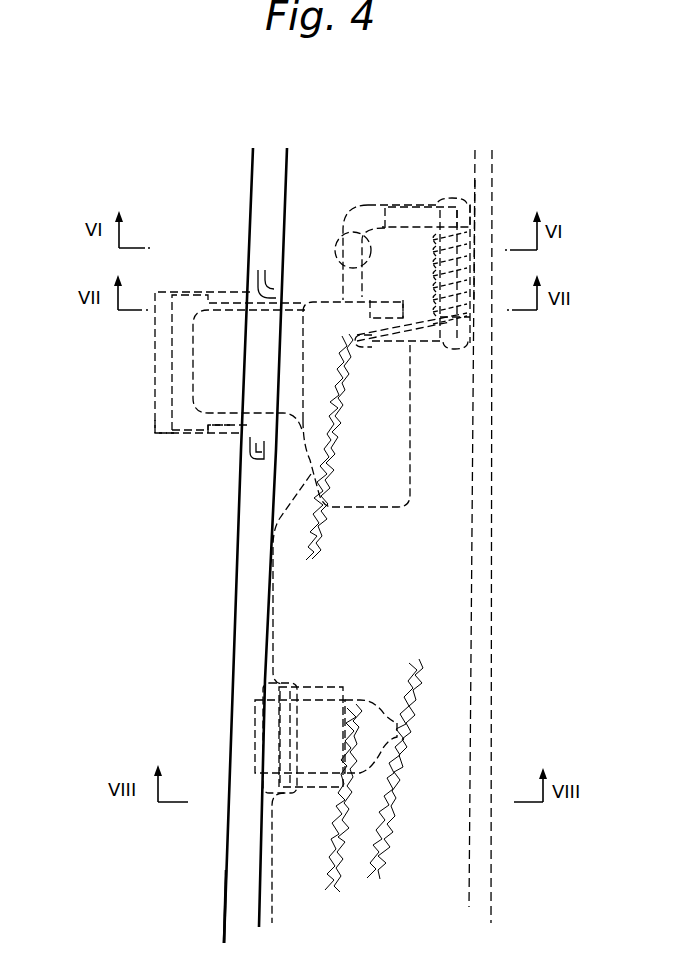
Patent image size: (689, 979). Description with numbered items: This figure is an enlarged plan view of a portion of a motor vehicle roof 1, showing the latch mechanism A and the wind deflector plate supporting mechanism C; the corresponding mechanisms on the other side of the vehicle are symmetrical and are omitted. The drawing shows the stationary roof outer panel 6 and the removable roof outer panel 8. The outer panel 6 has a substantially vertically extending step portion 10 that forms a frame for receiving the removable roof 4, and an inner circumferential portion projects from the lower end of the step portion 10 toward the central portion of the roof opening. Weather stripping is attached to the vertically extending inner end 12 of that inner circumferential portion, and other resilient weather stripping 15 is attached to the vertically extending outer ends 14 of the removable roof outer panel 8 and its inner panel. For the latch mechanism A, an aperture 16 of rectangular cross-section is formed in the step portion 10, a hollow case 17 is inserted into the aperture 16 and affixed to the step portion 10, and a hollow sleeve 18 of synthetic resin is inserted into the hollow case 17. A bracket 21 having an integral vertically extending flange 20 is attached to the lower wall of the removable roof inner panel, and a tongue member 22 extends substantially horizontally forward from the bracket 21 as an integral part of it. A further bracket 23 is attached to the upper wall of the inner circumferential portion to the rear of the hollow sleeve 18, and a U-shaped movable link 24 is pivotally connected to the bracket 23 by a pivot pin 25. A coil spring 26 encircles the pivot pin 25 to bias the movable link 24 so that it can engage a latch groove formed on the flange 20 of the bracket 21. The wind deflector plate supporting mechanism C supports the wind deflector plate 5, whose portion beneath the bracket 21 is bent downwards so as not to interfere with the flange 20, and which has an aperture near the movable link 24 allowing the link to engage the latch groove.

The assembly 1 is at (200, 170).
The removable roof 4 is at (421, 154).
The wind deflector plate 5 is at (470, 860).
The stationary roof outer panel 6 is at (231, 190).
The removable roof outer panel 8 is at (437, 176).
The step portion 10 is at (254, 172).
The inner end 12 is at (488, 825).
The outer ends 14 is at (258, 905).
The weather stripping 15 is at (238, 883).
The aperture 16 is at (245, 458).
The hollow case 17 is at (163, 437).
The hollow sleeve 18 is at (213, 440).
The flange 20 is at (323, 297).
The bracket 21 is at (385, 492).
The tongue member 22 is at (197, 367).
The bracket 23 is at (410, 200).
The movable link 24 is at (352, 210).
The pivot pin 25 is at (470, 262).
The coil spring 26 is at (472, 294).
The latch mechanism A is at (225, 266).
The wind deflector plate supporting mechanism C is at (240, 700).